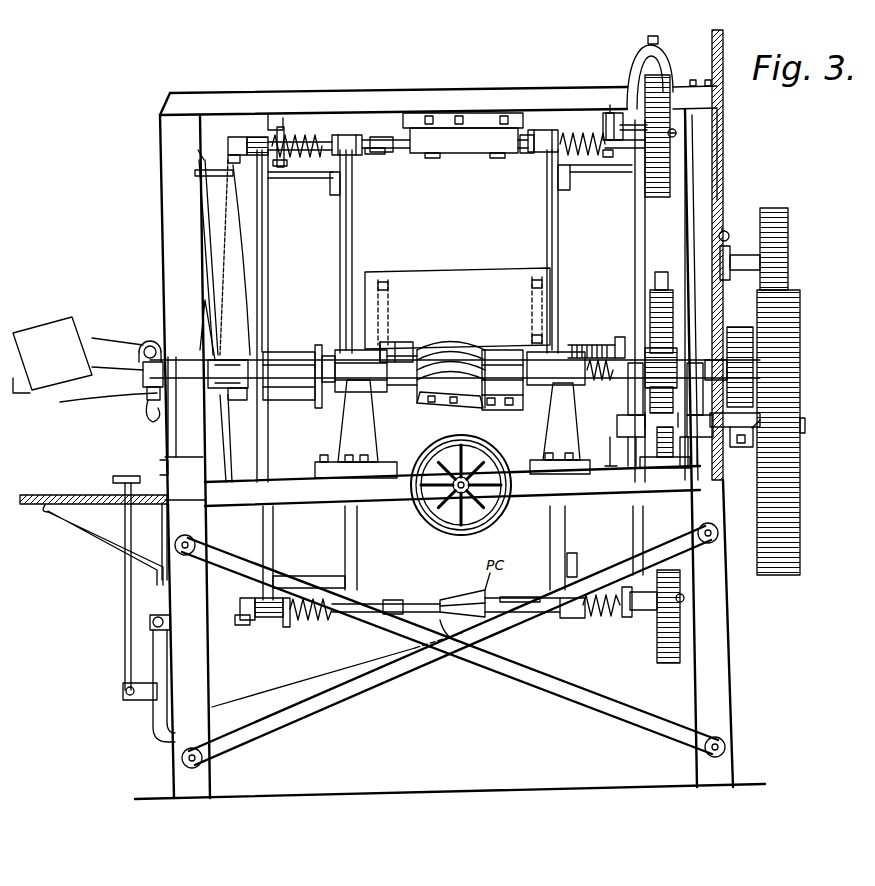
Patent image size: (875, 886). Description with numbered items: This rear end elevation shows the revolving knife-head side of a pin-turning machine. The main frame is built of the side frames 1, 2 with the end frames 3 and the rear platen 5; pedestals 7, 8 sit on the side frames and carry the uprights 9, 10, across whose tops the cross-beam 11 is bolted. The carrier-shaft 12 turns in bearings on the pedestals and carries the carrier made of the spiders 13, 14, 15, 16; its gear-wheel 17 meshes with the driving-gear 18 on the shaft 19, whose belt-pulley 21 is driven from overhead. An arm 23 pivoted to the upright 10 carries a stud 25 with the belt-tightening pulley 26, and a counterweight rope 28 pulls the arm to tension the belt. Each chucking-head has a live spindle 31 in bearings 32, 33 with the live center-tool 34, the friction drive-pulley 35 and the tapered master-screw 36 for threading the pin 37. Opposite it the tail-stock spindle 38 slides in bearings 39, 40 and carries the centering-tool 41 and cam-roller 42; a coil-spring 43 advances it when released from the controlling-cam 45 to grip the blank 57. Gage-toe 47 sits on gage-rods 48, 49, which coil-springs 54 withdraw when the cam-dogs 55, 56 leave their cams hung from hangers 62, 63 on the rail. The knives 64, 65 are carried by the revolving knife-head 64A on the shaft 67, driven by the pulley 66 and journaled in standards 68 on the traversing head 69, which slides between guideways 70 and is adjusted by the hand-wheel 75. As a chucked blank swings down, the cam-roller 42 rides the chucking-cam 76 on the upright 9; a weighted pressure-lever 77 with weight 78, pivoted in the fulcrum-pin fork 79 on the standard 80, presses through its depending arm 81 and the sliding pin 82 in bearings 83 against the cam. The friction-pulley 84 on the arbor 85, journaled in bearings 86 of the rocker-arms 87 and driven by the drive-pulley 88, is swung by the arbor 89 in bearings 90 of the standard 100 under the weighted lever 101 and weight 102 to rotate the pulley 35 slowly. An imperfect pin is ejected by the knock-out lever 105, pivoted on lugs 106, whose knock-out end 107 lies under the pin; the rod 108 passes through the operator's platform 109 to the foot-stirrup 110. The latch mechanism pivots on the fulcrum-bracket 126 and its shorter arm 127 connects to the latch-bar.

The side frame 1 is at (173, 753).
The side frame 2 is at (724, 660).
The end frame 3 is at (455, 657).
The rear platen 5 is at (452, 486).
The pedestal 7 is at (185, 456).
The pedestal 8 is at (692, 452).
The upright 9 is at (189, 194).
The upright 10 is at (701, 294).
The cross-beam 11 is at (447, 92).
The carrier-shaft 12 is at (598, 382).
The spider 13 is at (269, 228).
The spider 14 is at (353, 222).
The spider 15 is at (559, 225).
The spider 16 is at (640, 228).
The gear-wheel 17 is at (661, 288).
The driving-gear 18 is at (668, 468).
The shaft 19 is at (806, 426).
The belt-pulley 21 is at (745, 413).
The arm 23 is at (730, 236).
The stud 25 is at (740, 255).
The belt-tightening pulley 26 is at (789, 250).
The rope 28 is at (724, 150).
The live spindle 31 is at (677, 133).
The bearing 32 is at (543, 131).
The bearing 33 is at (630, 359).
The live center-tool 34 is at (522, 153).
The friction drive-pulley 35 is at (657, 197).
The master-screw 36 is at (582, 134).
The pin 37 is at (450, 596).
The tail-stock spindle 38 is at (240, 607).
The bearing 39 is at (260, 135).
The bearing 40 is at (345, 136).
The centering-tool 41 is at (396, 140).
The cam-roller 42 is at (228, 155).
The coil-spring 43 is at (295, 144).
The controlling-cam 45 is at (226, 240).
The gage-toe 47 is at (395, 152).
The gage-rod 48 is at (532, 155).
The gage-rod 49 is at (378, 155).
The coil-spring 54 is at (583, 345).
The cam-dog 55 is at (609, 112).
The cam-dog 56 is at (283, 125).
The blank 57 is at (464, 143).
The supporting-hanger 62 is at (628, 96).
The supporting-hanger 63 is at (272, 128).
The knife 64 is at (447, 404).
The web plate 64A is at (410, 388).
The knife 65 is at (503, 410).
The drive pulley 66 is at (303, 385).
The shaft 67 is at (393, 385).
The standard 68 is at (459, 421).
The traversing head 69 is at (390, 468).
The guideway 70 is at (322, 458).
The hand-wheel 75 is at (418, 516).
The chucking-cam 76 is at (202, 245).
The weighted pressure-lever 77 is at (117, 347).
The weight 78 is at (52, 355).
The fulcrum-pin fork 79 is at (149, 345).
The standard 80 is at (163, 472).
The depending arm 81 is at (142, 378).
The sliding pin 82 is at (172, 400).
The bearing 83 is at (150, 398).
The friction-pulley 84 is at (680, 345).
The arbor 85 is at (715, 358).
The journal-bearing 86 is at (640, 350).
The rocker-arm 87 is at (628, 395).
The drive-pulley 88 is at (745, 360).
The arbor 89 is at (630, 468).
The bearing 90 is at (612, 434).
The standard 100 is at (667, 430).
The weighted lever 101 is at (752, 428).
The weight 102 is at (740, 447).
The knock-out lever 105 is at (268, 693).
The lug 106 is at (156, 617).
The knock-out end 107 is at (453, 629).
The rod 108 is at (123, 588).
The operator's platform 109 is at (93, 491).
The foot-stirrup 110 is at (127, 476).
The fulcrum-bracket 126 is at (150, 420).
The shorter arm 127 is at (96, 403).